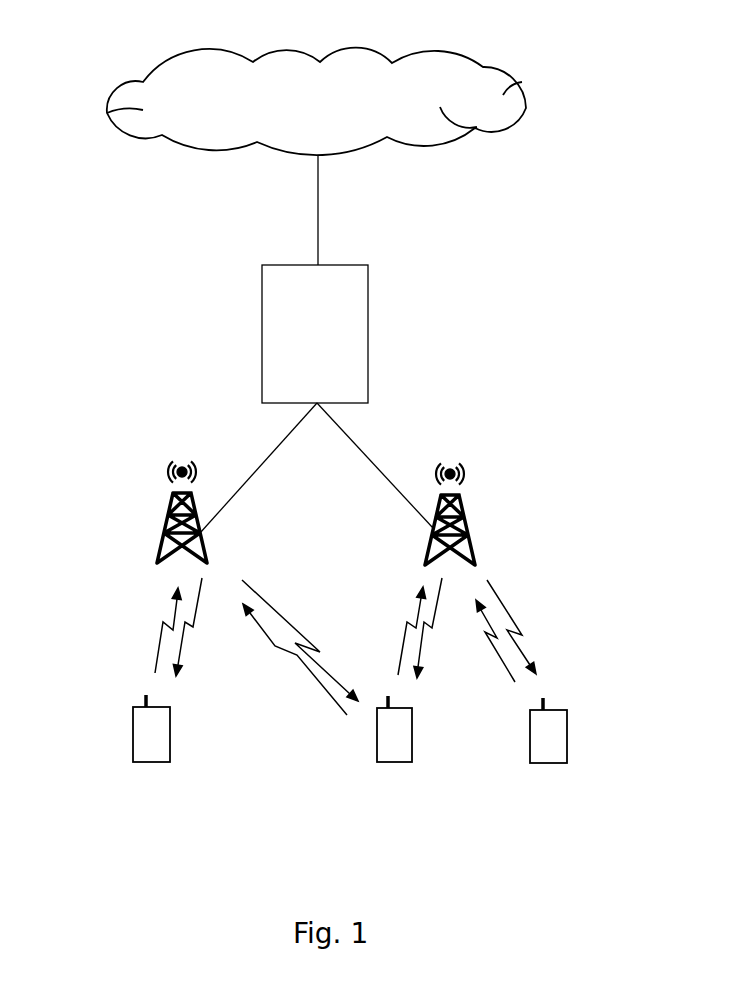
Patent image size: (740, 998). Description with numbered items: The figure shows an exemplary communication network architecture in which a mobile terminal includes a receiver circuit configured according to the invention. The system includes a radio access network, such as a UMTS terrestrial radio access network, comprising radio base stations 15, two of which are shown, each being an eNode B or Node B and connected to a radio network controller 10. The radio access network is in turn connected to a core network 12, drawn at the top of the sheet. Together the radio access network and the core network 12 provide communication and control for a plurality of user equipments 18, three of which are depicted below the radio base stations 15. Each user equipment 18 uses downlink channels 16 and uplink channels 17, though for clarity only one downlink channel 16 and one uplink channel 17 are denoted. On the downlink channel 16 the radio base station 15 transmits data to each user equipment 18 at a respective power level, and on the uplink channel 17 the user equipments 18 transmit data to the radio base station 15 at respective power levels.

The radio network controller 10 is at (368, 328).
The core network 12 is at (527, 93).
The radio base station 15 is at (168, 522).
The downlink channel 16 is at (253, 590).
The uplink channel 17 is at (160, 630).
The user equipment 18 is at (133, 730).